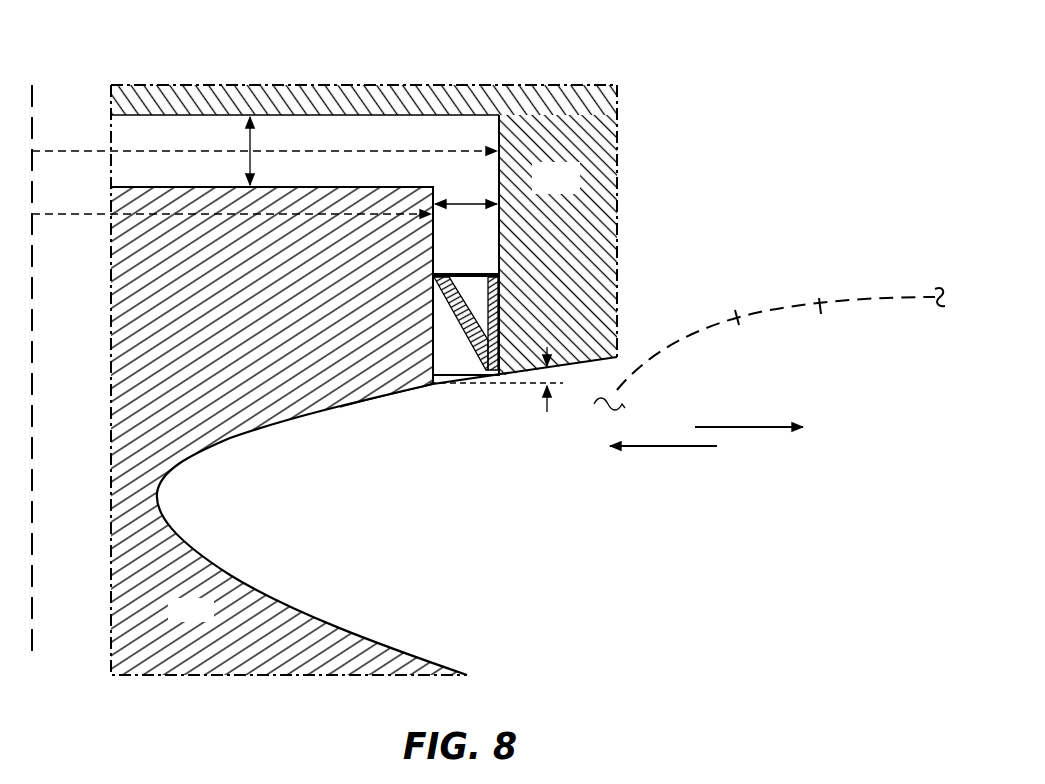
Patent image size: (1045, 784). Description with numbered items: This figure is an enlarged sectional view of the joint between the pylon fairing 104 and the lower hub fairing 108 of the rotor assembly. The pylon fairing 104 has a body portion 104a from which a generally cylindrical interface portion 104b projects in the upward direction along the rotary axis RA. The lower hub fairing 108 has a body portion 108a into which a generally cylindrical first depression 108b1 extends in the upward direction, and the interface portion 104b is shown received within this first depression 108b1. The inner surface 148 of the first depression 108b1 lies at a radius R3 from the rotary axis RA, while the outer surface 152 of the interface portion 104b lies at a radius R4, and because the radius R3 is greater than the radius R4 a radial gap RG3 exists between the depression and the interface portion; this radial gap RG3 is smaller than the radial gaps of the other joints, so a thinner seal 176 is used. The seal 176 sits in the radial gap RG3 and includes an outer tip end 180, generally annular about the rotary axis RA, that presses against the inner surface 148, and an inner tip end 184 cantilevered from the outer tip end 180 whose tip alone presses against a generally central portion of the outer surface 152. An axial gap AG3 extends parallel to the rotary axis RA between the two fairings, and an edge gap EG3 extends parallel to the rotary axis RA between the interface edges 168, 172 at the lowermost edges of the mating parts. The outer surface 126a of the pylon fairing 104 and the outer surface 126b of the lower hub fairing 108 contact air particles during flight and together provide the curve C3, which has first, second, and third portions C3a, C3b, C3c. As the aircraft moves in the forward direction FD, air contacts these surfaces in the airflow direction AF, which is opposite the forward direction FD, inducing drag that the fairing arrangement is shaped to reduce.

The pylon fairing 104 is at (173, 620).
The body portion of the pylon fairing 104a is at (143, 538).
The interface portion 104b is at (268, 382).
The lower hub fairing 108 is at (539, 191).
The body portion of the lower hub fairing 108a is at (423, 84).
The first depression 108b1 is at (500, 278).
The outer surface of the pylon fairing 126a is at (340, 410).
The outer surface of the lower hub fairing 126b is at (597, 369).
The inner surface of the first depression 148 is at (498, 130).
The outer surface of the interface portion 152 is at (434, 202).
The interface edge 168 is at (493, 377).
The interface edge 172 is at (437, 386).
The seal 176 is at (493, 345).
The outer tip end 180 is at (504, 235).
The inner tip end 184 is at (433, 274).
The axial gap AG3 is at (247, 143).
The radial gap RG3 is at (472, 203).
The edge gap EG3 is at (501, 397).
The radius R3 is at (50, 150).
The radius R4 is at (50, 213).
The rotary axis RA is at (32, 352).
The curve C3 is at (710, 325).
The first portion of the curve C3a is at (876, 305).
The second portion of the curve C3b is at (763, 310).
The third portion of the curve C3c is at (677, 338).
The forward direction FD is at (762, 426).
The airflow direction AF is at (655, 449).